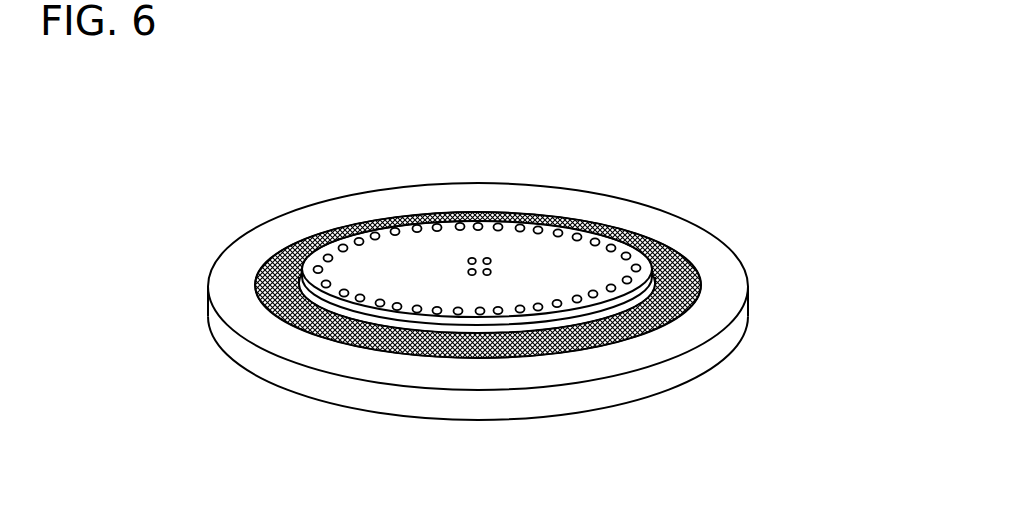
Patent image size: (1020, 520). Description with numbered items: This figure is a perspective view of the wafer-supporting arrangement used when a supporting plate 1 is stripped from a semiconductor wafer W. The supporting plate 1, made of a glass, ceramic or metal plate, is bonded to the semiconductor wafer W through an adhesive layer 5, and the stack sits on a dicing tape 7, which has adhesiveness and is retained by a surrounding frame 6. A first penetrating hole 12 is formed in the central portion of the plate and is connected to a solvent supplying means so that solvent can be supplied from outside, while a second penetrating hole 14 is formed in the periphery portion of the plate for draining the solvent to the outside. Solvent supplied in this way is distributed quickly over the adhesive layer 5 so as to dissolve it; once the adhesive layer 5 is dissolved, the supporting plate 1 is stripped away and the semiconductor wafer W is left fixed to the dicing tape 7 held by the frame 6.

The supporting plate 1 is at (580, 258).
The adhesive layer 5 is at (502, 328).
The frame 6 is at (728, 283).
The dicing tape 7 is at (283, 253).
The first penetrating hole 12 is at (487, 255).
The second penetrating hole 14 is at (357, 242).
The semiconductor wafer W is at (406, 328).